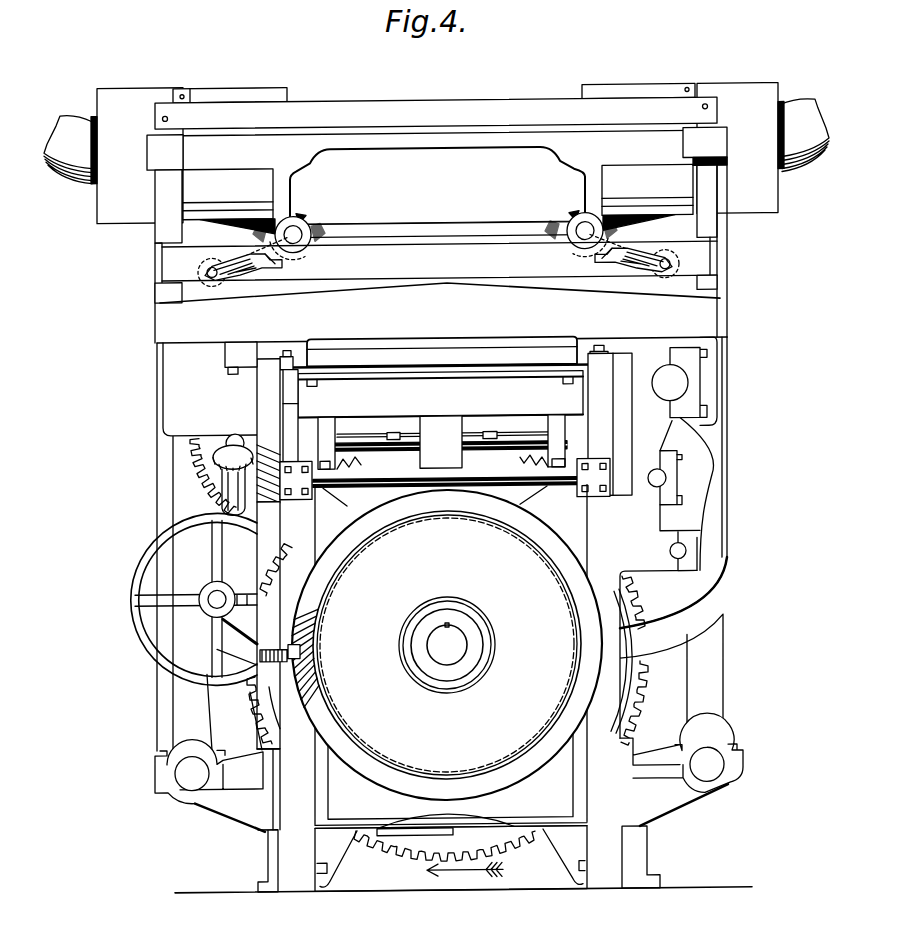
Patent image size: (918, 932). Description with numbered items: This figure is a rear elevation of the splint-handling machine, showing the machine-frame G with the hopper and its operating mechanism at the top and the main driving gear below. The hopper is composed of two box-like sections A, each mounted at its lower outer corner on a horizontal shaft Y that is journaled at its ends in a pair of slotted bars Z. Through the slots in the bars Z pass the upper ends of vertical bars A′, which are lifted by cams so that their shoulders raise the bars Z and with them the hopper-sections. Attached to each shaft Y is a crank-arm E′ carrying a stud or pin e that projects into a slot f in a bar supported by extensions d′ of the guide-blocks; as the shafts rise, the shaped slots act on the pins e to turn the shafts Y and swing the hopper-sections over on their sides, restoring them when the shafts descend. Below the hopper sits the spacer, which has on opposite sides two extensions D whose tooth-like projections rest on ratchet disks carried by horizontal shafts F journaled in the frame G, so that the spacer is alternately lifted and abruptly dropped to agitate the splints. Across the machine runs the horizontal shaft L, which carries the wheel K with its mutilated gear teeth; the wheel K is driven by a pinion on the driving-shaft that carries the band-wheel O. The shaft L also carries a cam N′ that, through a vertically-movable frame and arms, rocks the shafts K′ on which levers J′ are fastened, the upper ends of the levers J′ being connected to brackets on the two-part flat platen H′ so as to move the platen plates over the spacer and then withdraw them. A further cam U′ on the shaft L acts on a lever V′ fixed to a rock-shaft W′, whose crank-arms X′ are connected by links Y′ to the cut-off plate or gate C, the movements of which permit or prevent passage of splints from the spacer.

The hopper-section A is at (770, 152).
The vertical bar A′ is at (720, 228).
The crank-arm E′ is at (262, 218).
The bar Z is at (384, 150).
The horizontal shaft Y is at (298, 231).
The horizontal shaft F is at (439, 261).
The stud or pin e is at (206, 271).
The slot f is at (272, 263).
The extension of guide-block d′ is at (165, 293).
The cut-off plate or gate C is at (442, 311).
The two-part flat platen H′ is at (478, 356).
The crank-arm X′ is at (258, 404).
The link Y′ is at (293, 373).
The extension D is at (712, 395).
The rock-shaft W′ is at (448, 492).
The lever V′ is at (276, 558).
The band-wheel O is at (132, 606).
The cam N′ is at (214, 605).
The cam U′ is at (320, 648).
The horizontal shaft L is at (448, 666).
The lever J′ is at (175, 718).
The rock-shaft K′ is at (190, 785).
The machine-frame G is at (280, 846).
The wheel K is at (387, 843).